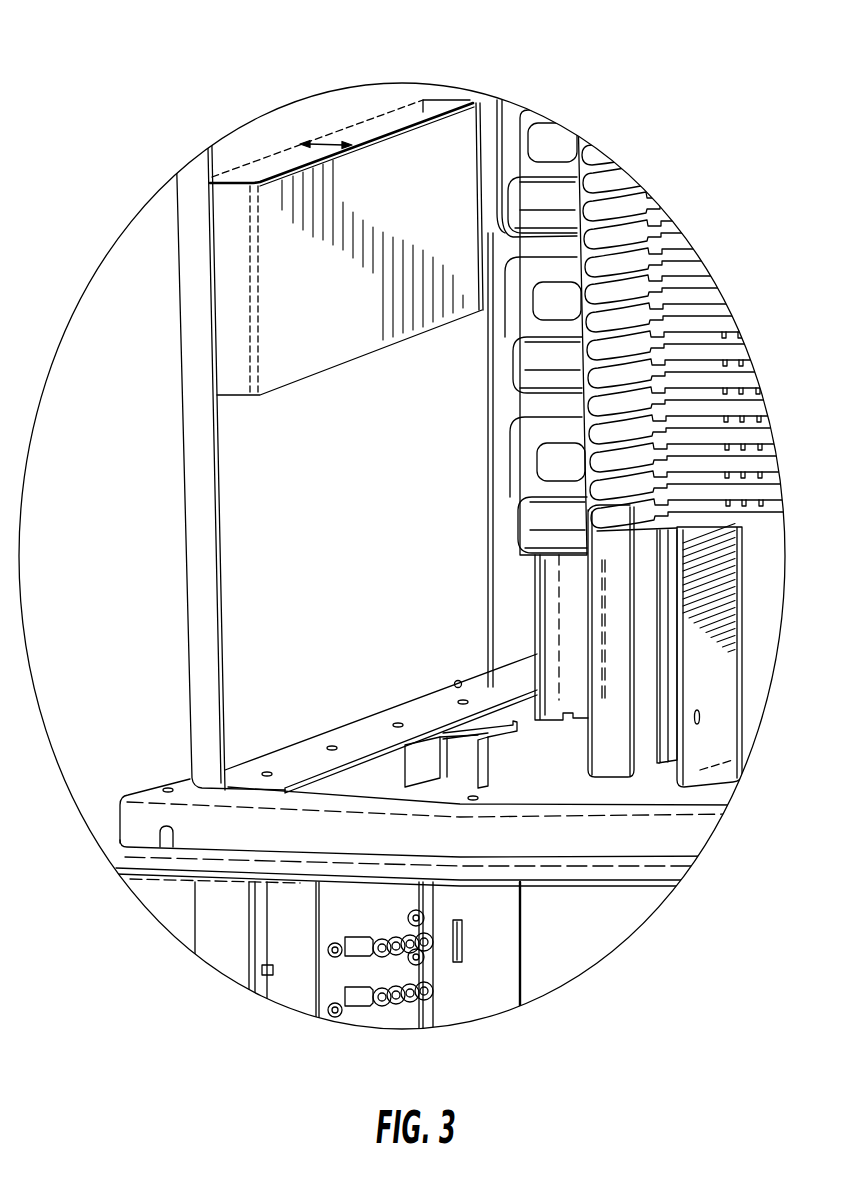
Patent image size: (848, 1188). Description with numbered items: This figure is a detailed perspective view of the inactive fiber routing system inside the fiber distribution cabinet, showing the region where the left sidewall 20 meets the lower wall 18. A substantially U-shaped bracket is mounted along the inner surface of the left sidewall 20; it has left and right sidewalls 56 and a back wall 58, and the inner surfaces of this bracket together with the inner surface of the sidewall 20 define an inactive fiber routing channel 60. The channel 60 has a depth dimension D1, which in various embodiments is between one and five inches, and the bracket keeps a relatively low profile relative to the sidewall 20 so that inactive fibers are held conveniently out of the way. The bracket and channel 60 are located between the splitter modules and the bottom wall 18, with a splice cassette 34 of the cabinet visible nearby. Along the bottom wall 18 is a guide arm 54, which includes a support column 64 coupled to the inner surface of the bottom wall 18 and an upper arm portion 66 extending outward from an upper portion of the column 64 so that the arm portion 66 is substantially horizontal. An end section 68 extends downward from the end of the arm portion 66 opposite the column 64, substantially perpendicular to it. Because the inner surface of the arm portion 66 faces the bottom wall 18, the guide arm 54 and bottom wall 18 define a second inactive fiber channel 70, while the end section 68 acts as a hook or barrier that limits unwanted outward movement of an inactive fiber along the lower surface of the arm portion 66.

The lower wall 18 is at (567, 798).
The left sidewall 20 is at (233, 533).
The splice cassette 34 is at (710, 383).
The guide arm 54 is at (433, 782).
The left and right sidewalls 56 is at (443, 100).
The back wall 58 is at (440, 157).
The channel 60 is at (370, 133).
The support column 64 is at (440, 758).
The upper arm portion 66 is at (463, 700).
The end section 68 is at (512, 725).
The second inactive fiber channel 70 is at (498, 763).